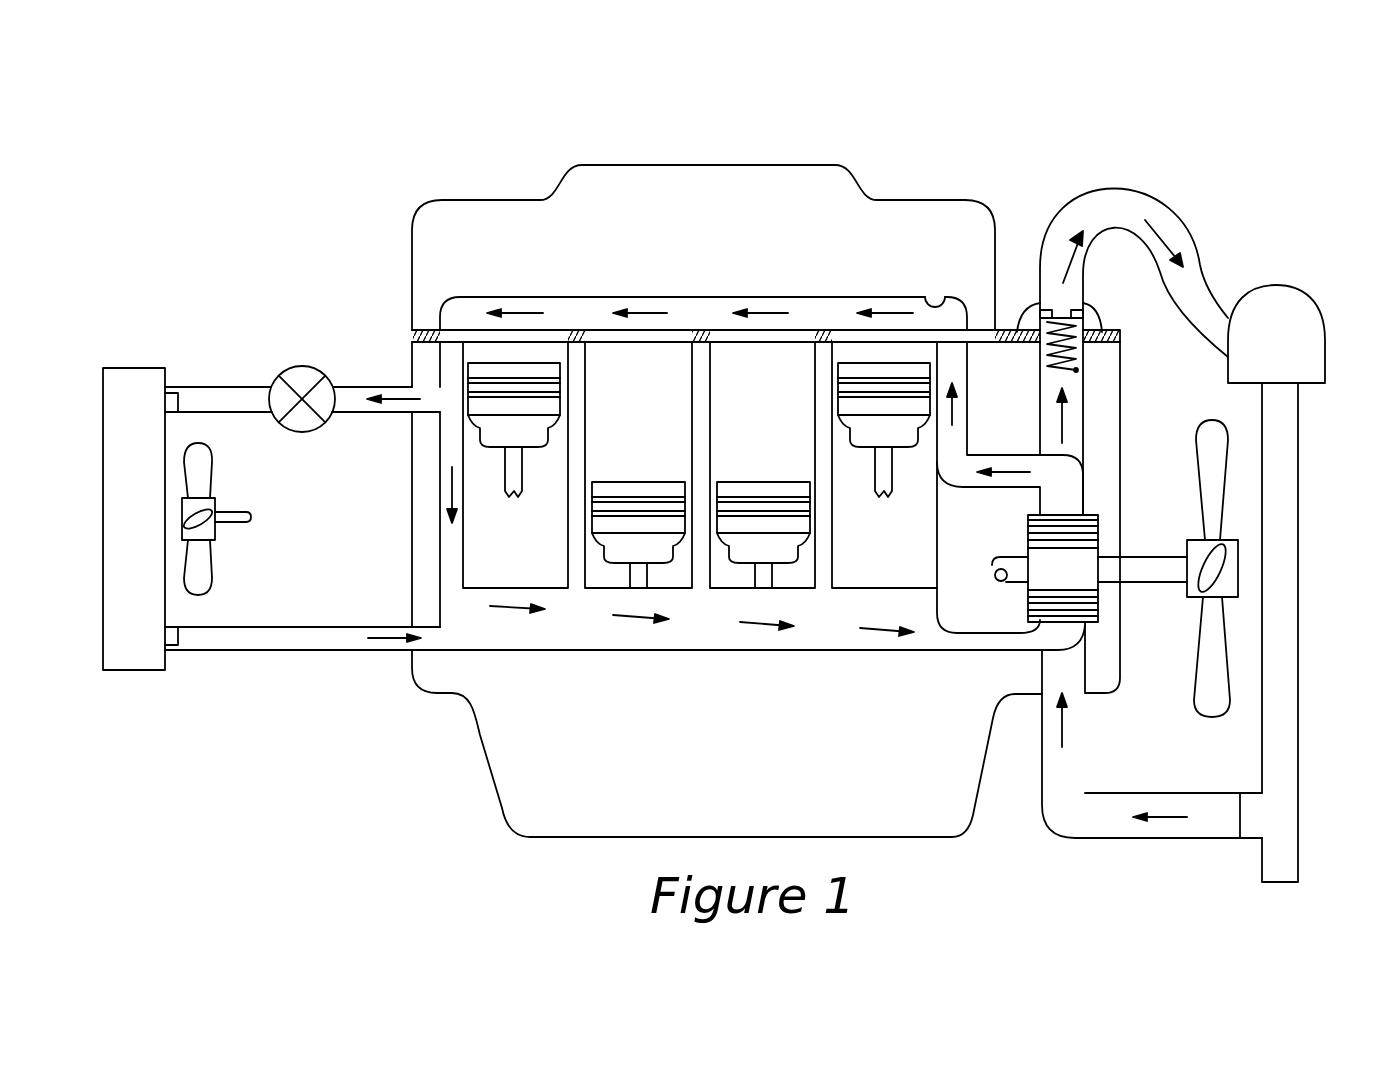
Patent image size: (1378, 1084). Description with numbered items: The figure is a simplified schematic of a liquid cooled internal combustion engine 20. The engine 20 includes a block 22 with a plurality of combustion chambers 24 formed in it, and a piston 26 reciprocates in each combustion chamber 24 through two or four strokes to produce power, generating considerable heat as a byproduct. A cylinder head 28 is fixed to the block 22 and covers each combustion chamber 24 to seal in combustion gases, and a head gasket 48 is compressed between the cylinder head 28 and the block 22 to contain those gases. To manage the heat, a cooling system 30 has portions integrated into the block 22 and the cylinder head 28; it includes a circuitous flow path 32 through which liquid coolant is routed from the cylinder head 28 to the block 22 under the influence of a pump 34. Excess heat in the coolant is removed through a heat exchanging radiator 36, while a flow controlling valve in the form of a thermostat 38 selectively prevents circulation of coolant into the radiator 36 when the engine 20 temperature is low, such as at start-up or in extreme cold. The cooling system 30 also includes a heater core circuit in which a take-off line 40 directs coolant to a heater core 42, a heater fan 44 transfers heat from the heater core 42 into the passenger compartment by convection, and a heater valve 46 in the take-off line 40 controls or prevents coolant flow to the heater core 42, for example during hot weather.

The internal combustion engine 20 is at (310, 132).
The block 22 is at (410, 518).
The combustion chambers 24 is at (466, 565).
The piston 26 is at (540, 363).
The cylinder head 28 is at (412, 308).
The cooling system 30 is at (714, 286).
The circuitous flow path 32 is at (947, 298).
The pump 34 is at (1078, 530).
The radiator 36 is at (1300, 650).
The thermostat 38 is at (1057, 306).
The take-off line 40 is at (363, 413).
The heater core 42 is at (103, 528).
The heater fan 44 is at (210, 590).
The heater valve 46 is at (301, 366).
The head gasket 48 is at (423, 320).